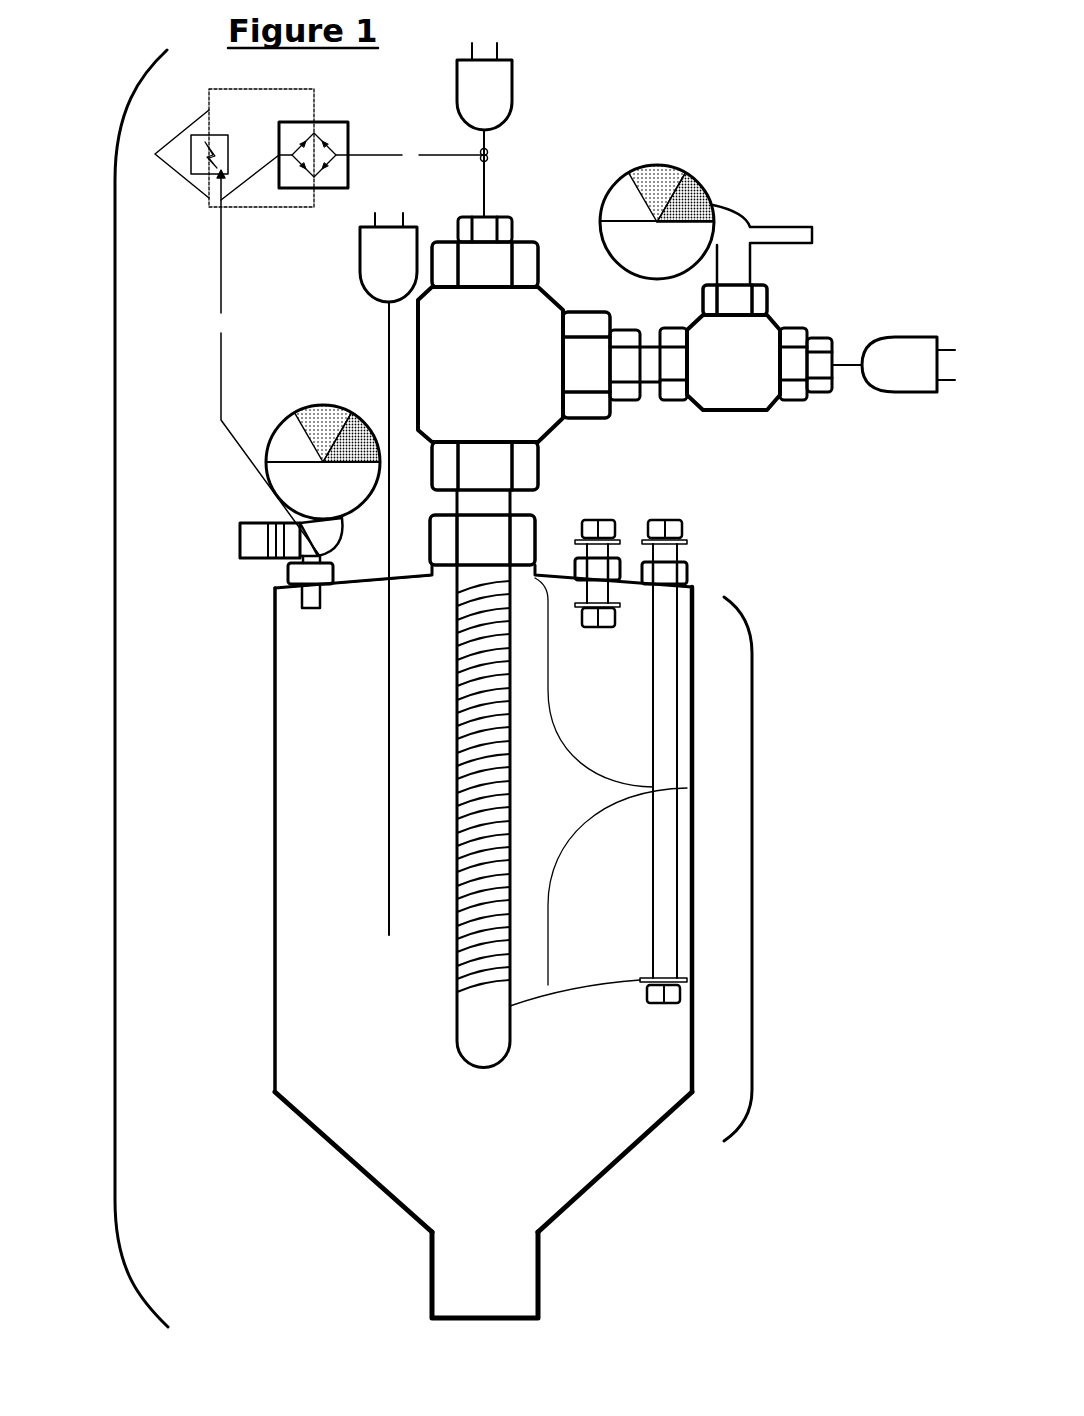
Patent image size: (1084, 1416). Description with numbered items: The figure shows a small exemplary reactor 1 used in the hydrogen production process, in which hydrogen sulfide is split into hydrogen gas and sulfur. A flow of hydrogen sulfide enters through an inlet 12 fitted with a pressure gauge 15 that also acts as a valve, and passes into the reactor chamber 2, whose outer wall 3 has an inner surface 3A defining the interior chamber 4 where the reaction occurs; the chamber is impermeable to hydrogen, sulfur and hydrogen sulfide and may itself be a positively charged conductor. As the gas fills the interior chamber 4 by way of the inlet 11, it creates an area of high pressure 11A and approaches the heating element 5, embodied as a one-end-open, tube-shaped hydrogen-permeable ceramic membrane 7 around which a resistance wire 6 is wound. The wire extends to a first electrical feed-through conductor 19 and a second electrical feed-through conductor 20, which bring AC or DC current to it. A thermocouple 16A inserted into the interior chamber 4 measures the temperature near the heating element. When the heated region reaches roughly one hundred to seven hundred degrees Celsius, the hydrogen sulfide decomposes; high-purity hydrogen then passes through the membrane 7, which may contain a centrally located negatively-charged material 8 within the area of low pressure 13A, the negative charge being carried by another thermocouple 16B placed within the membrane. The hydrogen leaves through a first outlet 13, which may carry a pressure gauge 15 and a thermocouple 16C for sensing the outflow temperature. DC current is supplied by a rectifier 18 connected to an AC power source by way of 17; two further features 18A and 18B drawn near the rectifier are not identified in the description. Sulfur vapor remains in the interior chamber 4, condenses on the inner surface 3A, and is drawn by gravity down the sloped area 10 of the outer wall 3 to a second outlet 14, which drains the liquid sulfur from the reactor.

The reactor 1 is at (112, 690).
The reactor chamber 2 is at (757, 869).
The outer wall 3 is at (275, 903).
The inner surface of the outer wall 3A is at (283, 978).
The interior chamber 4 is at (312, 1022).
The heating element 5 is at (460, 1000).
The resistance wire 6 is at (492, 787).
The hydrogen-permeable ceramic membrane 7 is at (480, 1057).
The negatively-charged material 8 is at (517, 500).
The sloped area 10 is at (377, 1187).
The inlet 11 is at (310, 612).
The area of high pressure 11A is at (300, 800).
The inlet 12 is at (240, 542).
The first outlet 13 is at (815, 238).
The area of low pressure 13A is at (485, 577).
The second outlet 14 is at (483, 1317).
The pressure gauge 15 is at (660, 190).
The thermocouple 16A is at (386, 325).
The thermocouple 16B is at (487, 175).
The thermocouple 16C is at (845, 363).
The AC power source connection 17 is at (223, 148).
The rectifier 18 is at (335, 132).
The positive lead 18A is at (219, 258).
The negative lead 18B is at (442, 152).
The first electrical feed-through conductor 19 is at (605, 517).
The second electrical feed-through conductor 20 is at (673, 517).